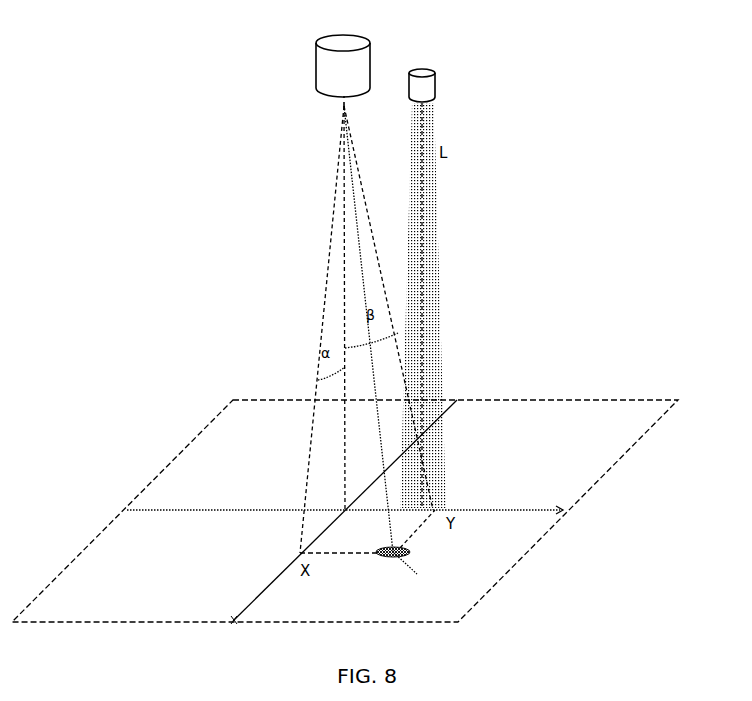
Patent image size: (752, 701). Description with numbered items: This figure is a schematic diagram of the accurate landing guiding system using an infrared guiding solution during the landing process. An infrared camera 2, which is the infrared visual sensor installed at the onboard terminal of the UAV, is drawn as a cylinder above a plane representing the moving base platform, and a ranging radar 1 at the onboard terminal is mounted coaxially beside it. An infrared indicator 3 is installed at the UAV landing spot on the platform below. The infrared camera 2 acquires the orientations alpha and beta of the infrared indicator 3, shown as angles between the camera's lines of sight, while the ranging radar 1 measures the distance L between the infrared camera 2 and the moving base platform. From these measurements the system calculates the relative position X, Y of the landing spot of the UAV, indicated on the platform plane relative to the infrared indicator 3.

The ranging radar 1 is at (437, 95).
The infrared camera 2 is at (332, 75).
The infrared indicator 3 is at (417, 574).